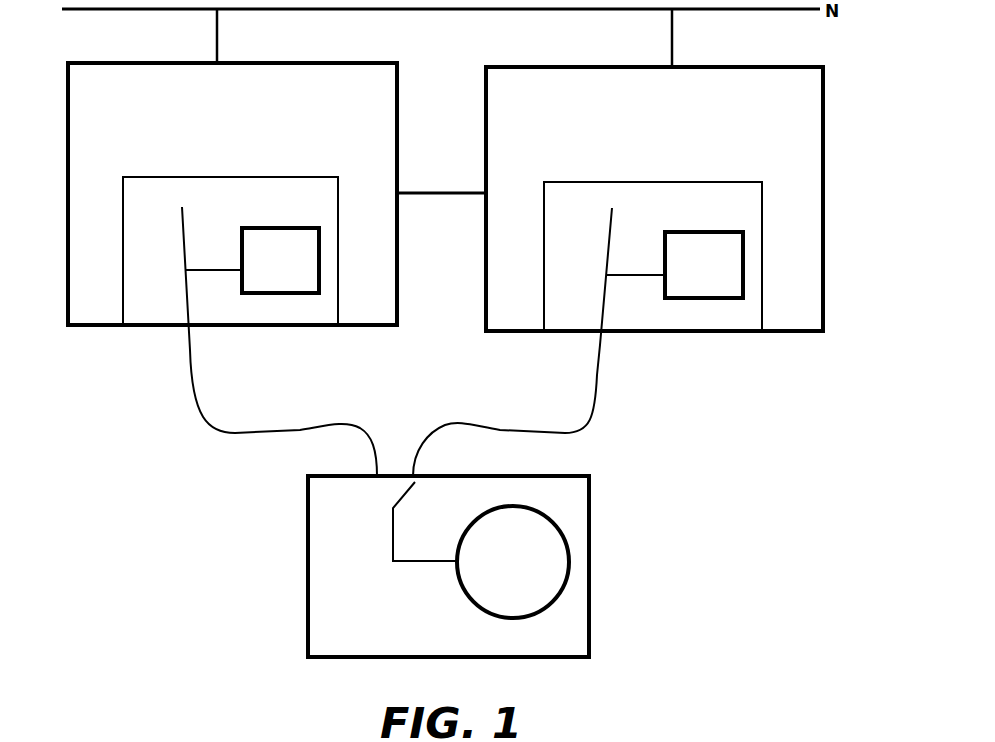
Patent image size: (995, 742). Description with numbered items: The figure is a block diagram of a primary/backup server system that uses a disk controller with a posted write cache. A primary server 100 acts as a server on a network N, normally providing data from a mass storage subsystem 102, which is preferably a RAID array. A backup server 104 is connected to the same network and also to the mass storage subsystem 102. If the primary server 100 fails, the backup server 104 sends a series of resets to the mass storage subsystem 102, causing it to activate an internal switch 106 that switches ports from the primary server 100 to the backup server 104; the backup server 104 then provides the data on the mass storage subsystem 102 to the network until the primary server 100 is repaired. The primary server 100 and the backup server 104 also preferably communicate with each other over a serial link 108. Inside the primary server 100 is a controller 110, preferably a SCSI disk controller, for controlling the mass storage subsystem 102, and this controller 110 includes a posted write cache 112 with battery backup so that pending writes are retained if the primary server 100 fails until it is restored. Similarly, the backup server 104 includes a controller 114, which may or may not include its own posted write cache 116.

The primary server 100 is at (823, 175).
The mass storage subsystem 102 is at (592, 547).
The backup server 104 is at (68, 213).
The internal switch 106 is at (405, 492).
The serial link 108 is at (413, 193).
The controller 110 is at (635, 182).
The posted write cache 112 is at (712, 232).
The controller 114 is at (162, 177).
The posted write cache 116 is at (253, 228).